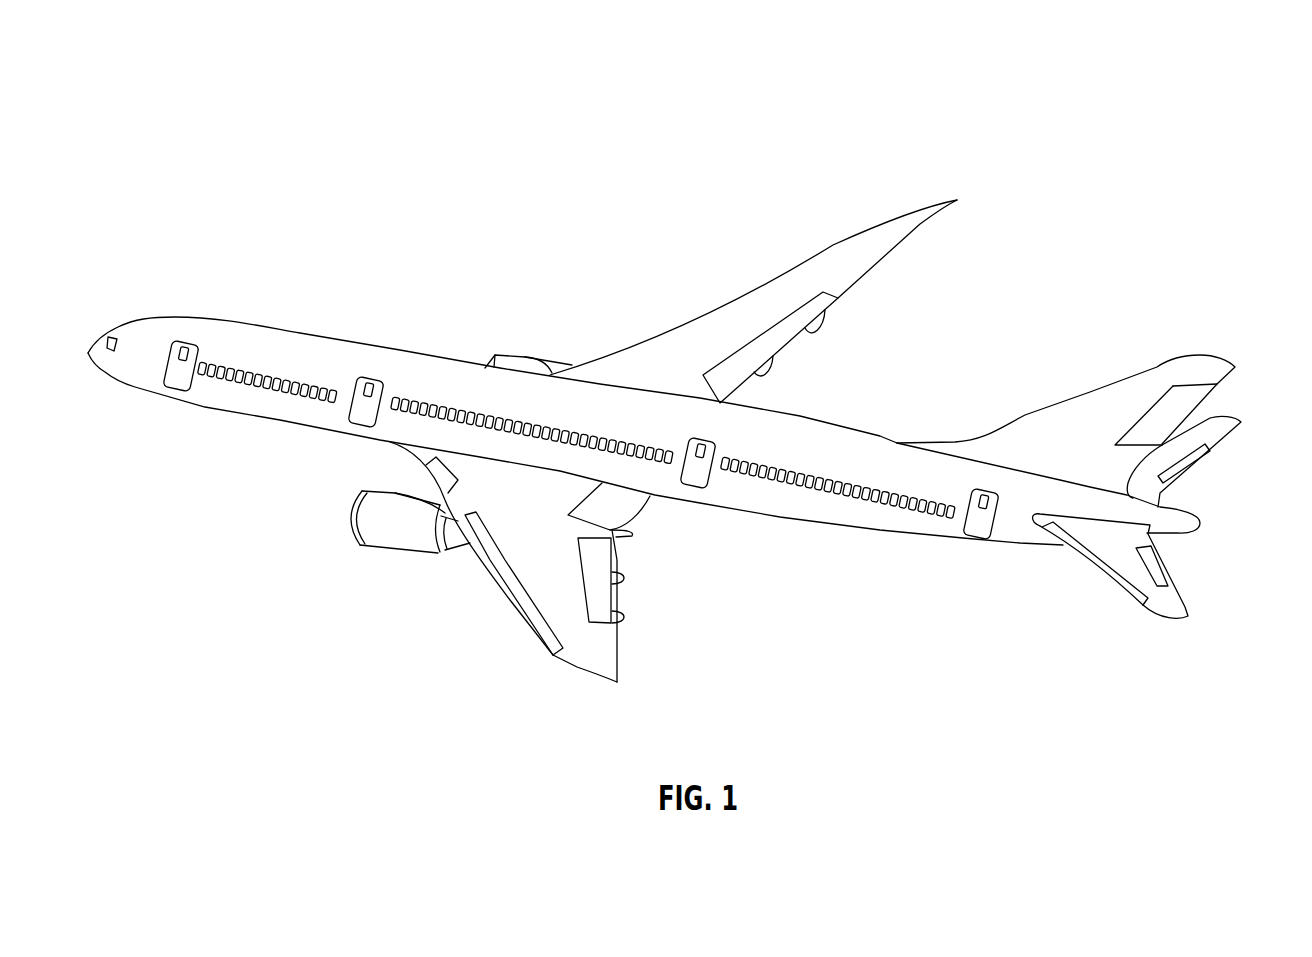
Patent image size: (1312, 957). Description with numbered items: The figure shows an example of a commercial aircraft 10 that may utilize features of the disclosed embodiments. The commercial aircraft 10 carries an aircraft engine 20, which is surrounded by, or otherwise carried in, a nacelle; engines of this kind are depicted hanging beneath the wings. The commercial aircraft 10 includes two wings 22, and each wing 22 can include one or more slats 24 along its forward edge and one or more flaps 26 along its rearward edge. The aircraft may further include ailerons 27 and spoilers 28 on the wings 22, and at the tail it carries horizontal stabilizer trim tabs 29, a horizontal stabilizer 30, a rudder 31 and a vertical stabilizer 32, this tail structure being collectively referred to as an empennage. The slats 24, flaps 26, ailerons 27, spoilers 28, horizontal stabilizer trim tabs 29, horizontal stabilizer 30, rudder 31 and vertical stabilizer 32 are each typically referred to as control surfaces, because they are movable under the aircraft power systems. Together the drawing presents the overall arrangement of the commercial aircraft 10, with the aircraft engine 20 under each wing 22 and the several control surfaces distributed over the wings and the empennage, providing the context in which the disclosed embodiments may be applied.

The commercial aircraft 10 is at (1112, 144).
The aircraft engine 20 is at (516, 363).
The wing 22 is at (681, 449).
The slat 24 is at (530, 610).
The flap 26 is at (793, 340).
The aileron 27 is at (900, 269).
The spoiler 28 is at (833, 248).
The horizontal stabilizer trim tab 29 is at (1097, 580).
The horizontal stabilizer 30 is at (1144, 585).
The rudder 31 is at (1170, 397).
The vertical stabilizer 32 is at (1210, 464).